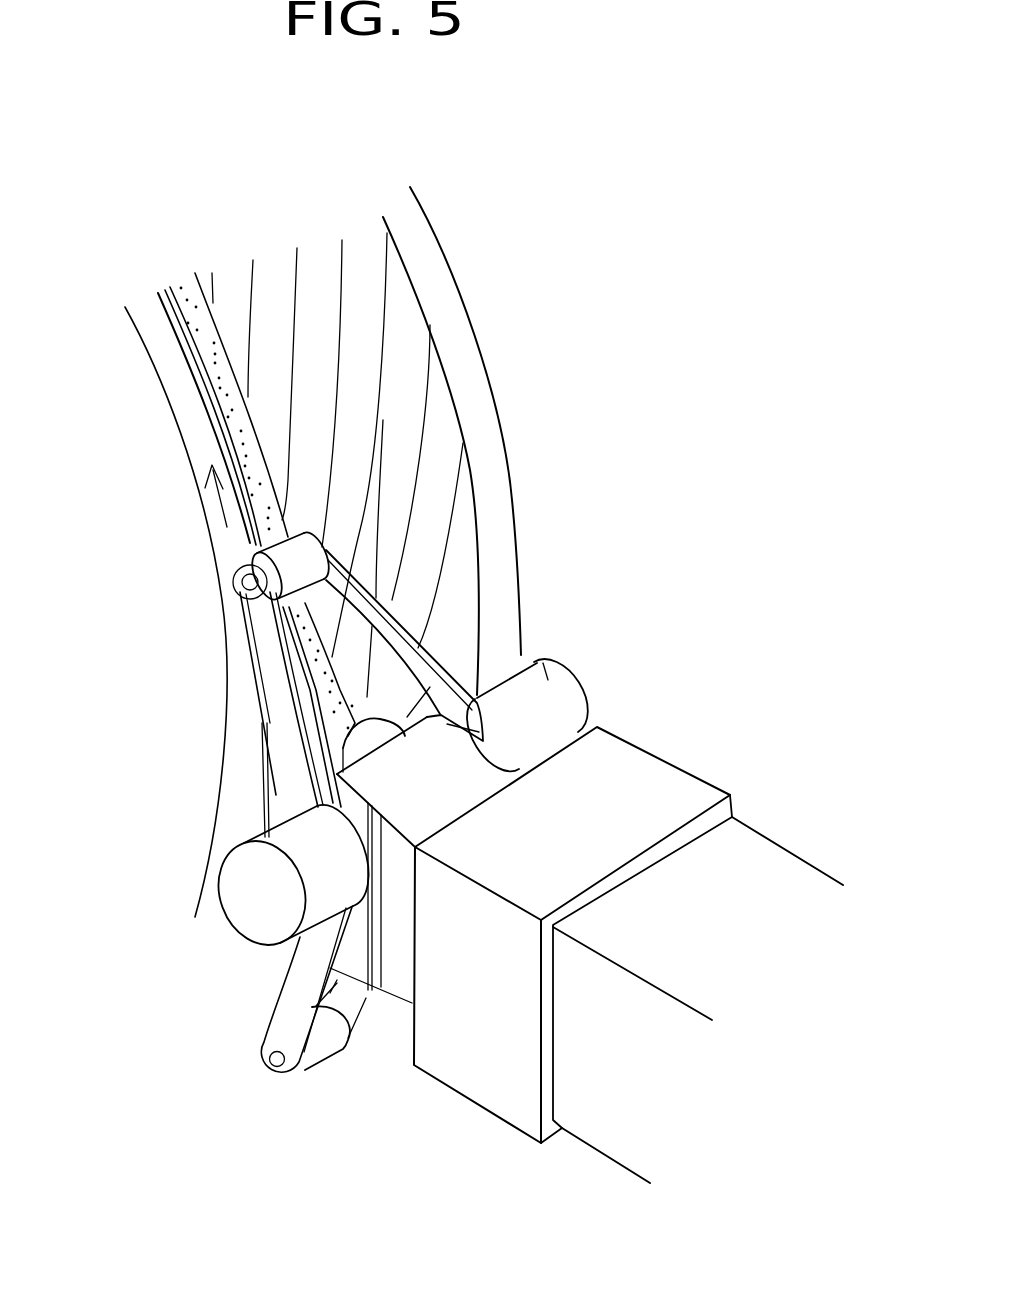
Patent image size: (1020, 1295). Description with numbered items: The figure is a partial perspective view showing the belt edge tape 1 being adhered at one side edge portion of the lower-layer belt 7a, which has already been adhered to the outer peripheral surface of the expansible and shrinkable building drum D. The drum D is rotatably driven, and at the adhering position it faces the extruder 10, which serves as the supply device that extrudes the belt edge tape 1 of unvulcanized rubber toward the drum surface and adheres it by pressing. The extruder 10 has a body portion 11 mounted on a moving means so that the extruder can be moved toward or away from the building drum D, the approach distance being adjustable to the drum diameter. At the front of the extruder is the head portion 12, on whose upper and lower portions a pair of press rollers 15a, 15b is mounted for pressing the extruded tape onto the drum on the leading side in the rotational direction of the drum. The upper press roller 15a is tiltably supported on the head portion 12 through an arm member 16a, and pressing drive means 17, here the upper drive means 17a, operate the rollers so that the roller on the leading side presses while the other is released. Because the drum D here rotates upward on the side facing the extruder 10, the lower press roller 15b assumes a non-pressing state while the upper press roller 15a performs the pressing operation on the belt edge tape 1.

The belt edge tape 1 is at (233, 403).
The lower-layer belt 7a is at (372, 302).
The building drum D is at (463, 338).
The upper press roller 15a is at (293, 545).
The arm member 16a is at (400, 632).
The pressing drive means 17a is at (540, 662).
The head portion 12 is at (467, 788).
The extruder 10 is at (722, 757).
The body portion 11 is at (768, 883).
The roller 17 is at (350, 747).
The lower press roller 15b is at (320, 1067).